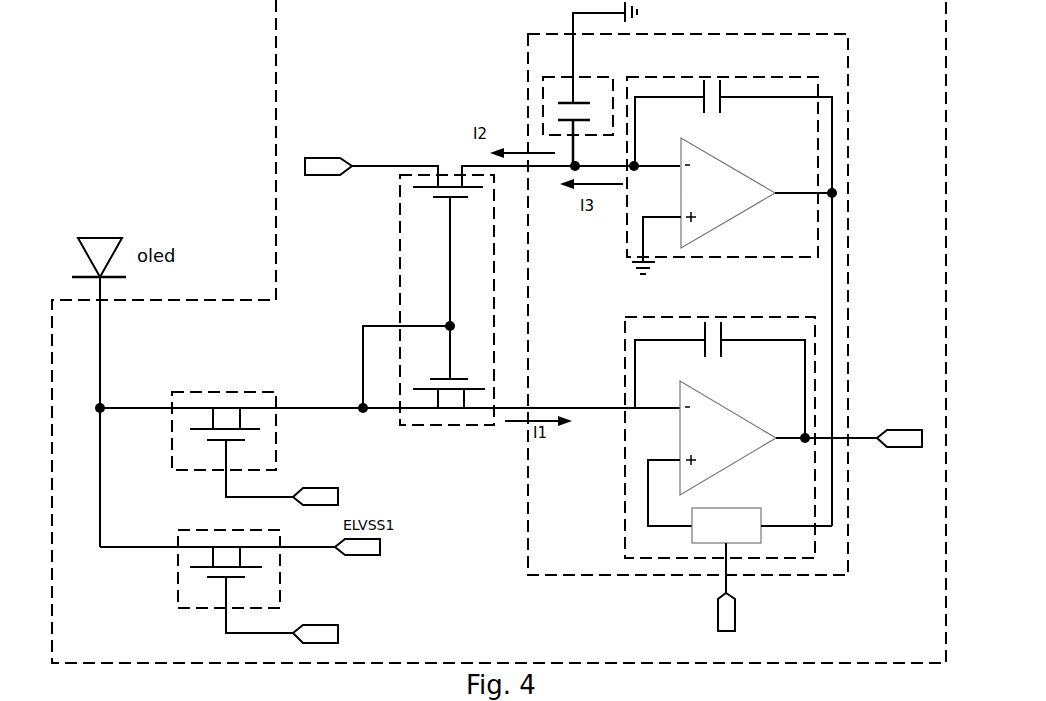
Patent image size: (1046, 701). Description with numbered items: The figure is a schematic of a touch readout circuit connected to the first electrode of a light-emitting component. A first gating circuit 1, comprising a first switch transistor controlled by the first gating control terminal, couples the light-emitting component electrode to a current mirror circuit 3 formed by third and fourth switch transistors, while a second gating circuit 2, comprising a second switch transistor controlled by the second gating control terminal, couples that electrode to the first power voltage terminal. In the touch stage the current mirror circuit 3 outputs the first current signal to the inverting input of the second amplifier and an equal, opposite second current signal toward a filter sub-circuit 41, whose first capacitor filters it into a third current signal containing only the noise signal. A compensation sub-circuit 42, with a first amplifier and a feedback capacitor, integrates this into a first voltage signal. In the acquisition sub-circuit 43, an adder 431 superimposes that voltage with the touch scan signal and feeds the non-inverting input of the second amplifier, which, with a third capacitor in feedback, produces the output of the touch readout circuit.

The first gating circuit 1 is at (202, 392).
The second gating circuit 2 is at (178, 580).
The current mirror circuit 3 is at (400, 265).
The filter sub-circuit 41 is at (597, 77).
The compensation sub-circuit 42 is at (720, 77).
The acquisition sub-circuit 43 is at (774, 461).
The adder 431 is at (724, 508).